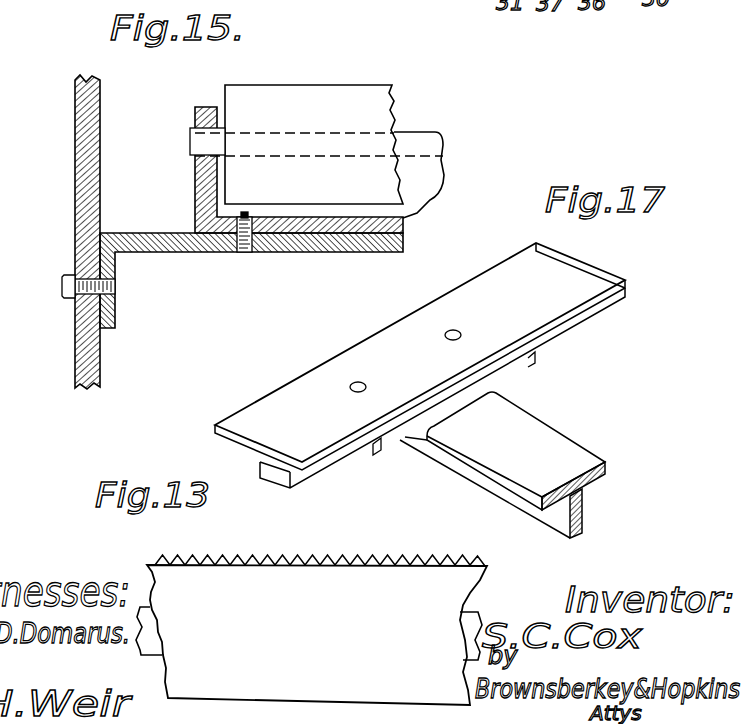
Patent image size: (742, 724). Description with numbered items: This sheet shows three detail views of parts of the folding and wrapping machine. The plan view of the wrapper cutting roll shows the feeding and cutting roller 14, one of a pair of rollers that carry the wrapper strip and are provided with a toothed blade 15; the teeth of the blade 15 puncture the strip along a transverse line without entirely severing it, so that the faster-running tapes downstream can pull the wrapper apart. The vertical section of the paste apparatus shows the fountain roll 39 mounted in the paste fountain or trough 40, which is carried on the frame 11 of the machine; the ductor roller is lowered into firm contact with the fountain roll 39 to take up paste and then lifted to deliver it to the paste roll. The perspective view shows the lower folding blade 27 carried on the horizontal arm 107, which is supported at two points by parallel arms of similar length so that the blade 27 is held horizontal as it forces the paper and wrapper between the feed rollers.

In FIG. 15, the frame 11 is at (75, 179).
In FIG. 15, the paste fountain or trough 40 is at (195, 197).
In FIG. 15, the fountain roll 39 is at (318, 92).
In FIG. 17, the folding blade 27 is at (556, 308).
In FIG. 17, the horizontal arm 107 is at (573, 453).
In FIG. 13, the feeding and cutting roller 14 is at (412, 585).
In FIG. 13, the toothed blade 15 is at (262, 558).